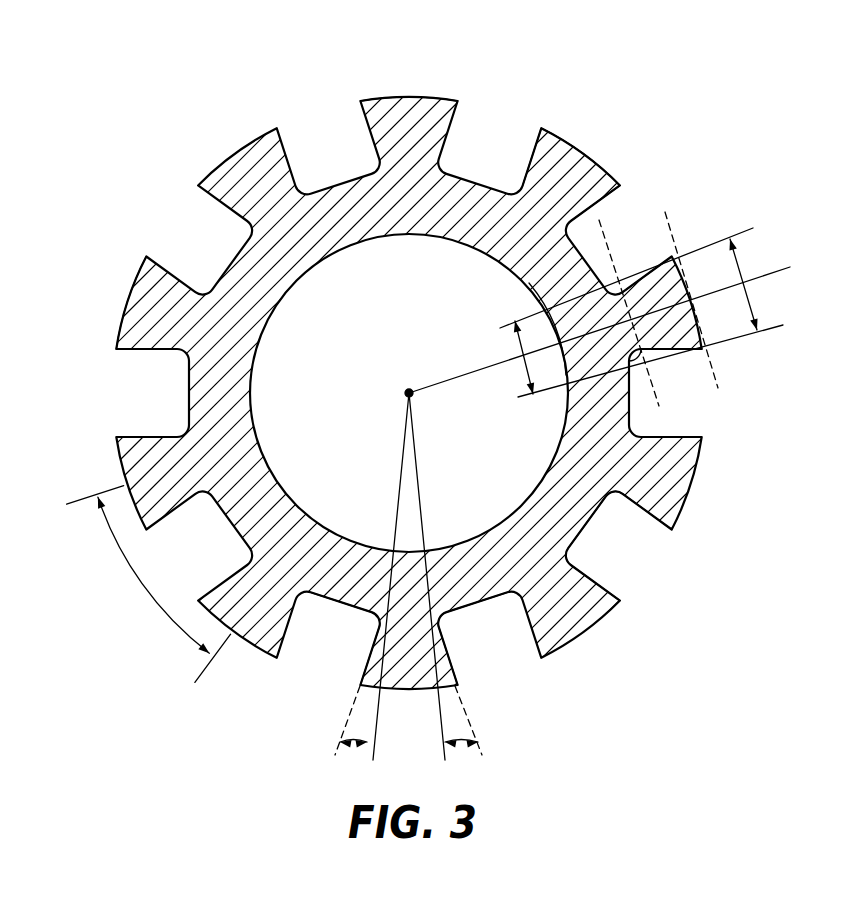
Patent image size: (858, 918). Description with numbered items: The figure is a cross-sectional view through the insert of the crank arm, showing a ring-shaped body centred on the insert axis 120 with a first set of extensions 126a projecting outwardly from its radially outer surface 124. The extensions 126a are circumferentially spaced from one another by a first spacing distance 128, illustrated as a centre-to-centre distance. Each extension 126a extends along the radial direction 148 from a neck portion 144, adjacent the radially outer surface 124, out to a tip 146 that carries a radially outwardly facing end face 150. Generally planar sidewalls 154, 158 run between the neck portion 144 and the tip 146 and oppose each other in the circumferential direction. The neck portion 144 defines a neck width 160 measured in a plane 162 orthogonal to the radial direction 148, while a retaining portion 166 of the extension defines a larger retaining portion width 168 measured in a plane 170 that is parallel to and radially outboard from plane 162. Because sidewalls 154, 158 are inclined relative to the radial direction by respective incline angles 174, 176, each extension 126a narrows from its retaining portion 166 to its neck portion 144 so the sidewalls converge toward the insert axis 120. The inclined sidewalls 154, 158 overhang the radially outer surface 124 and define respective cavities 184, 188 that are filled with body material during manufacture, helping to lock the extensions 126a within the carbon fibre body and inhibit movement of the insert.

The insert axis 120 is at (407, 391).
The radially outer surface 124 is at (598, 537).
The first set of extensions 126a is at (376, 101).
The first spacing distance 128 is at (140, 583).
The neck portion 144 is at (676, 350).
The tip 146 is at (754, 351).
The radial direction 148 is at (767, 278).
The end face 150 is at (587, 135).
The sidewall 154 is at (632, 288).
The sidewall 158 is at (664, 369).
The neck width 160 is at (518, 350).
The plane 162 is at (533, 280).
The retaining portion 166 is at (677, 248).
The retaining portion width 168 is at (741, 268).
The plane 170 is at (668, 216).
The incline angle 174 is at (463, 747).
The incline angle 176 is at (355, 746).
The cavity 184 is at (460, 632).
The cavity 188 is at (340, 632).